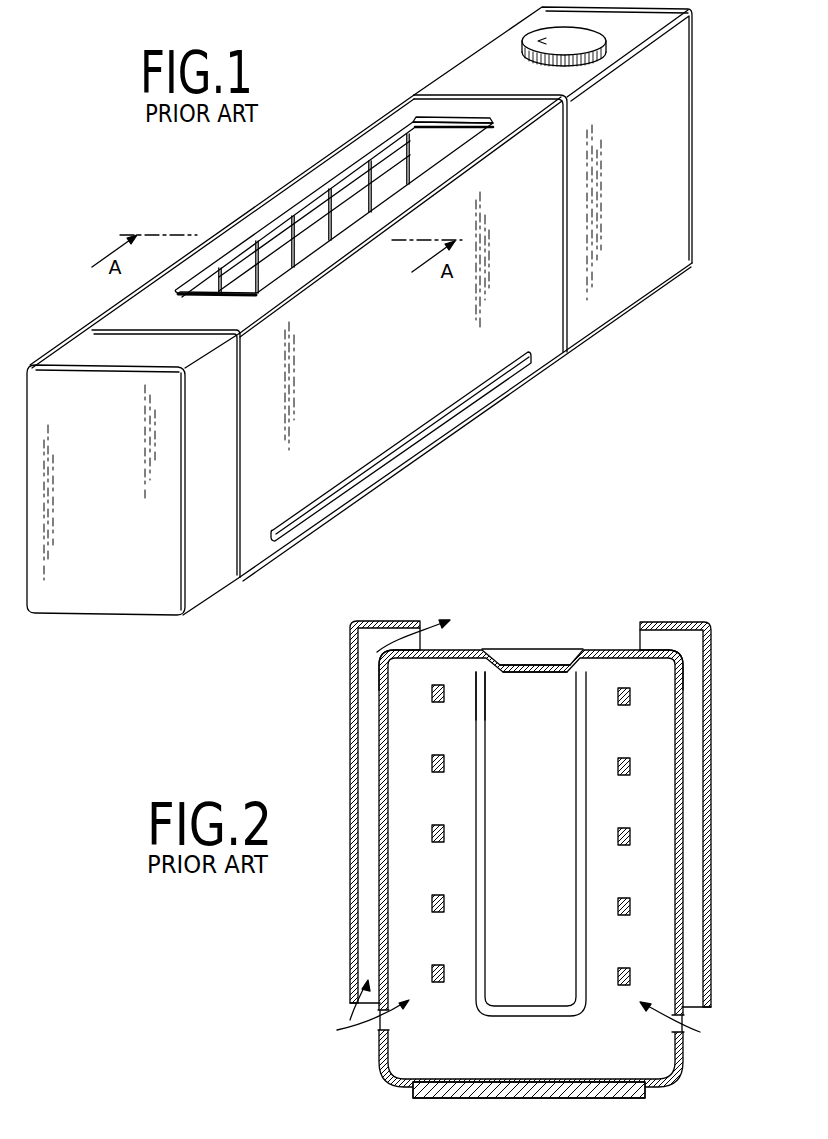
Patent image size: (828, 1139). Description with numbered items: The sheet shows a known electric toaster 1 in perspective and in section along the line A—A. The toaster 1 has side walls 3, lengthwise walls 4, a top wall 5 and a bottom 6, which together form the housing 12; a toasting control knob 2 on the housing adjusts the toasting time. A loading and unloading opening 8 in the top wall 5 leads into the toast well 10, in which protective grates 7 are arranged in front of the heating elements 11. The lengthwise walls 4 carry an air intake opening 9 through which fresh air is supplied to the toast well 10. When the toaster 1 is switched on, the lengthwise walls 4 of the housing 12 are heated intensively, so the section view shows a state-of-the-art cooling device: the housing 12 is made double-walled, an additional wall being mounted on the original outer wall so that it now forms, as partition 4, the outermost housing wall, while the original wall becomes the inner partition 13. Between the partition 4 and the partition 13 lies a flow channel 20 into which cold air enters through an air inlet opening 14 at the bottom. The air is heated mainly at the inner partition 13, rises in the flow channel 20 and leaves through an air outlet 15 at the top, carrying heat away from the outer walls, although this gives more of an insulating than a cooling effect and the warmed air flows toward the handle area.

In FIG. 1, the electric toaster 1 is at (361, 338).
In FIG. 1, the toasting control knob 2 is at (541, 40).
In FIG. 1, the side walls 3 is at (101, 596).
In FIG. 1, the lengthwise walls 4 is at (537, 318).
In FIG. 2, the lengthwise walls 4 is at (352, 778).
In FIG. 1, the top wall 5 is at (320, 177).
In FIG. 2, the bottom 6 is at (470, 1090).
In FIG. 1, the protective grates 7 is at (249, 256).
In FIG. 2, the protective grates 7 is at (482, 790).
In FIG. 1, the loading and unloading opening 8 is at (425, 128).
In FIG. 2, the loading and unloading opening 8 is at (550, 657).
In FIG. 1, the air intake opening 9 is at (443, 414).
In FIG. 2, the air intake opening 9 is at (380, 1028).
In FIG. 1, the toast well 10 is at (312, 246).
In FIG. 2, the toast well 10 is at (517, 718).
In FIG. 2, the heating elements 11 is at (435, 767).
In FIG. 1, the housing 12 is at (554, 143).
In FIG. 2, the housing 12 is at (386, 678).
In FIG. 2, the partition 13 is at (381, 746).
In FIG. 2, the air inlet opening 14 is at (692, 997).
In FIG. 2, the air outlet 15 is at (647, 640).
In FIG. 2, the flow channel 20 is at (368, 822).